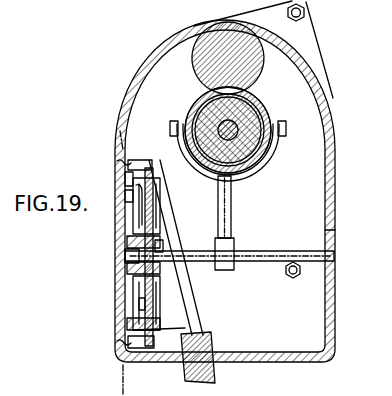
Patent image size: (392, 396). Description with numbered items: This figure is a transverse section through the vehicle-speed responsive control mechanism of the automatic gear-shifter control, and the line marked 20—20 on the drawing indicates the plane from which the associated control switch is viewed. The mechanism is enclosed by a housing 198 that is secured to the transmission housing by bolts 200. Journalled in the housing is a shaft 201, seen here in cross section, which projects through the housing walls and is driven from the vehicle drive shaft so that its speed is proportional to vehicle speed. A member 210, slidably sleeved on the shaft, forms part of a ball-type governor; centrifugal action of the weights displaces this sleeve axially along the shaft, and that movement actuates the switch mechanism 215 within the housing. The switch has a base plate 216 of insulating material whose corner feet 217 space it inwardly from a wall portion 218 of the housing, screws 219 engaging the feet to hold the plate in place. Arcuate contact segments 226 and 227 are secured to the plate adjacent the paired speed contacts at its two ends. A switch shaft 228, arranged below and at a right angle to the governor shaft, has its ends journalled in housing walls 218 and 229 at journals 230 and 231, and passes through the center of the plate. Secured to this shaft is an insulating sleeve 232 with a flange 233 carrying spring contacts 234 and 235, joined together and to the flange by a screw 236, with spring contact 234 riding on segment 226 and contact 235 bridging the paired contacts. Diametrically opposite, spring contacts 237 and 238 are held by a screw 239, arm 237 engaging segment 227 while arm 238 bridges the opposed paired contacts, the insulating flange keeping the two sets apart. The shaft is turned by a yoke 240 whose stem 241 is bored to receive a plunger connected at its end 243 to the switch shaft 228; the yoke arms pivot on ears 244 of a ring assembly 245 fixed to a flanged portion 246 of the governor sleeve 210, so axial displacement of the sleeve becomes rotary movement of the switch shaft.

The sprayer device 20 is at (116, 395).
The housing 198 is at (331, 90).
The bolts 200 is at (306, 13).
The shaft 201 is at (239, 128).
The member 210 is at (234, 108).
The switch mechanism 215 is at (167, 286).
The base plate 216 is at (155, 226).
The corner projections or feet 217 is at (126, 350).
The wall portion 218 is at (124, 180).
The screws 219 is at (116, 341).
The arcuate contact segment 226 is at (152, 186).
The contact segment 227 is at (145, 318).
The switch shaft 228 is at (261, 252).
The housing wall 229 is at (336, 230).
The journal 230 is at (116, 256).
The journal 231 is at (336, 256).
The sleeve 232 is at (163, 246).
The flange 233 is at (116, 286).
The spring contact 234 is at (160, 206).
The spring contact 235 is at (125, 197).
The screw 236 is at (116, 241).
The spring contact 237 is at (145, 304).
The spring contact 238 is at (116, 321).
The screw 239 is at (116, 270).
The yoke 240 is at (274, 163).
The stem 241 is at (233, 214).
The plunger end 243 is at (234, 238).
The ears or projections 244 is at (288, 128).
The ring assembly 245 is at (206, 97).
The flanged portion 246 is at (222, 89).